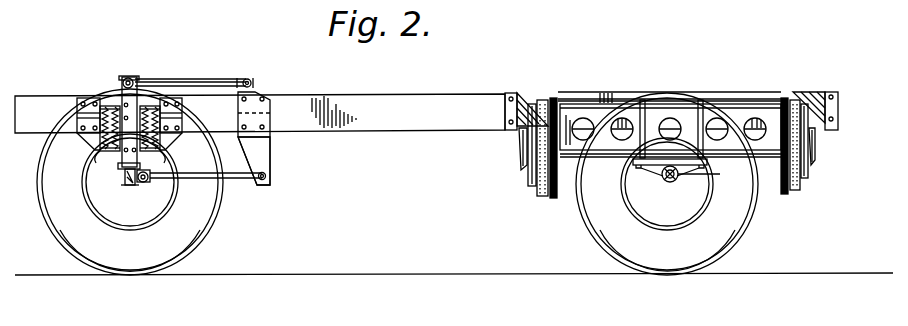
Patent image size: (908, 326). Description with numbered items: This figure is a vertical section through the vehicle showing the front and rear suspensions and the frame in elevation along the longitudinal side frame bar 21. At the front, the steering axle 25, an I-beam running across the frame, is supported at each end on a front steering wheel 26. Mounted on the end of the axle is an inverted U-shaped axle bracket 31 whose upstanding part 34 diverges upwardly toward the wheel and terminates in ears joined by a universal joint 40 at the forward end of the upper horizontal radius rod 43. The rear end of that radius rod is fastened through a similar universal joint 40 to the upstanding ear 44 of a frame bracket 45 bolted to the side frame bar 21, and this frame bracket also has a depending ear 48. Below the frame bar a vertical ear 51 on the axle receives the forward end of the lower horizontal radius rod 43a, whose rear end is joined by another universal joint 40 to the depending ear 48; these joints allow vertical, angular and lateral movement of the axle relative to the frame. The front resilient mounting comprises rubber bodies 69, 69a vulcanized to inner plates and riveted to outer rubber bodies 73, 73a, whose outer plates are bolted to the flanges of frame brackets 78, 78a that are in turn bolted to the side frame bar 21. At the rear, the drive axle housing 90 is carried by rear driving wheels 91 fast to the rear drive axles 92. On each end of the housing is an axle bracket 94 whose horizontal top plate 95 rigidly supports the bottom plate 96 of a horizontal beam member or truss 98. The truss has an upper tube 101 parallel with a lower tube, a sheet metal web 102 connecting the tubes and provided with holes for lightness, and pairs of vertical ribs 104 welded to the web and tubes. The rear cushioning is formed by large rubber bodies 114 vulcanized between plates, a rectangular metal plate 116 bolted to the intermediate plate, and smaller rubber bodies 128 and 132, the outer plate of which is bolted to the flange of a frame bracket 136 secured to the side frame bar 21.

The side frame bar 21 is at (440, 96).
The steering axle 25 is at (120, 198).
The front steering wheel 26 is at (64, 250).
The axle bracket 31 is at (121, 86).
The upstanding part of axle bracket 34 is at (126, 132).
The universal joint 40 is at (131, 80).
The upper horizontal radius rod 43 is at (208, 78).
The lower horizontal radius rod 43a is at (246, 183).
The upstanding ear 44 is at (268, 88).
The frame bracket 45 is at (266, 115).
The depending ear 48 is at (272, 150).
The vertical ear 51 is at (138, 185).
The rubber body 69 is at (110, 151).
The rubber body 69a is at (162, 155).
The outer rubber body 73 is at (102, 150).
The outer rubber body 73a is at (160, 150).
The frame bracket 78 is at (72, 112).
The frame bracket 78a is at (183, 108).
The drive axle housing 90 is at (688, 176).
The rear driving wheel 91 is at (737, 246).
The rear drive axle 92 is at (678, 180).
The axle bracket 94 is at (664, 174).
The top plate 95 is at (616, 180).
The bottom plate 96 is at (667, 141).
The horizontal beam member or truss 98 is at (730, 97).
The upper tube 101 is at (612, 80).
The sheet metal web 102 is at (632, 110).
The vertical rib 104 is at (702, 110).
The rubber body 114 is at (540, 176).
The rectangular metal plate 116 is at (550, 190).
The rubber body 128 is at (530, 152).
The rubber body 132 is at (519, 132).
The frame bracket 136 is at (838, 96).